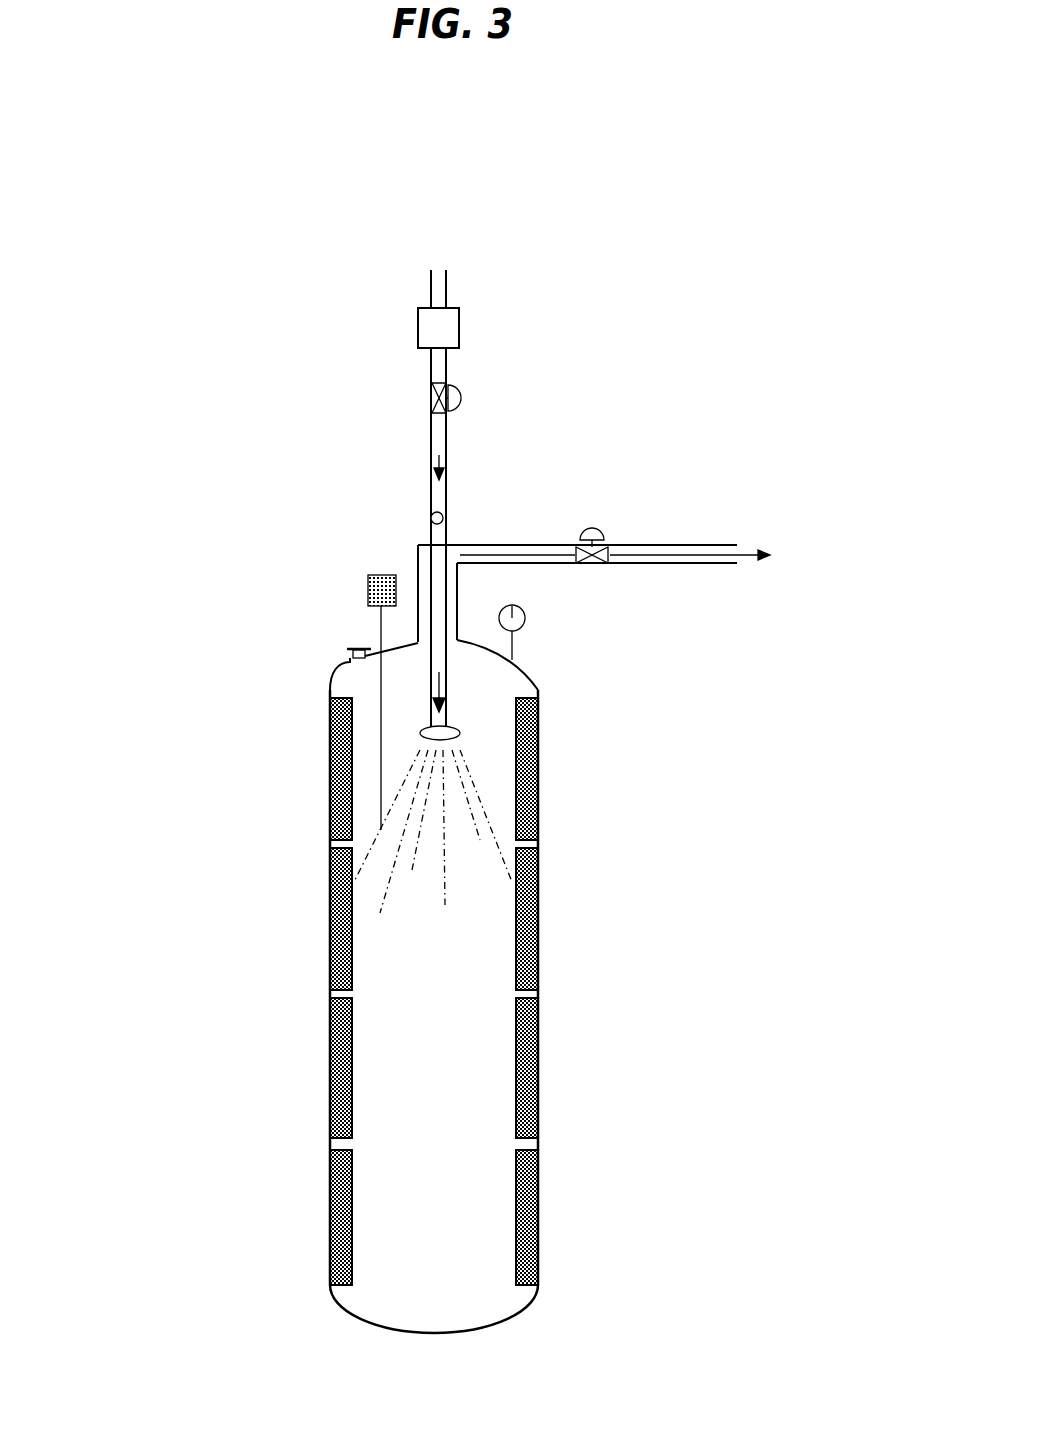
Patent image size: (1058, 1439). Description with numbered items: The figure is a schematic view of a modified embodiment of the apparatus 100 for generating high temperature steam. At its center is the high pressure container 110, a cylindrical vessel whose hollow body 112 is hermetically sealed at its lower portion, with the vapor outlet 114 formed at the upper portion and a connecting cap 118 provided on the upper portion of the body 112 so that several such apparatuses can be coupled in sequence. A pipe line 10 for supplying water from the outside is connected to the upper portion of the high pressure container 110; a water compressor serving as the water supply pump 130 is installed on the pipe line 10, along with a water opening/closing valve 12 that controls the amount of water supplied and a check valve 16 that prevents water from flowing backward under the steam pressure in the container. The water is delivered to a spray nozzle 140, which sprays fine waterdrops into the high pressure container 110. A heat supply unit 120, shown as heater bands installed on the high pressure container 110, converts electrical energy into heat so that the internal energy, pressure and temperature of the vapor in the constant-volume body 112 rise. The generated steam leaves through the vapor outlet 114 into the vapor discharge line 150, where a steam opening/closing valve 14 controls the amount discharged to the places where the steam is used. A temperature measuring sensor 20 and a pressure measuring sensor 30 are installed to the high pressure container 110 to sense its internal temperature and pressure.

The apparatus for generating high temperature steam 100 is at (478, 144).
The pipe line 10 is at (422, 293).
The water opening/closing valve 12 is at (463, 397).
The steam opening/closing valve 14 is at (603, 525).
The check valve 16 is at (430, 512).
The temperature measuring sensor 20 is at (357, 565).
The pressure measuring sensor 30 is at (525, 612).
The high pressure container 110 is at (453, 978).
The body 112 is at (435, 1046).
The vapor outlet 114 is at (467, 672).
The connecting cap 118 is at (345, 647).
The heat supply unit 120 is at (533, 913).
The water supply pump 130 is at (457, 328).
The spray nozzle 140 is at (432, 733).
The vapor discharge line 150 is at (698, 542).